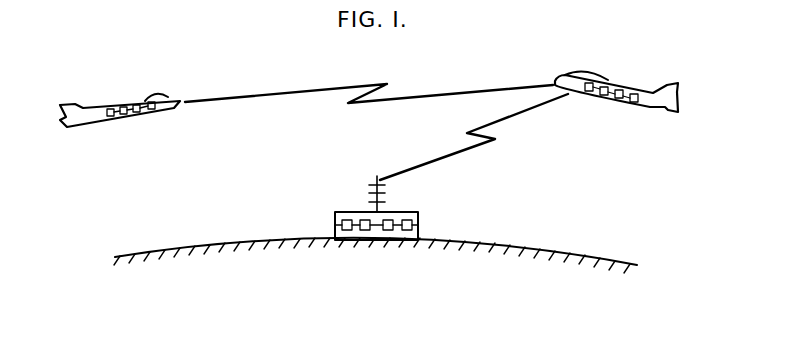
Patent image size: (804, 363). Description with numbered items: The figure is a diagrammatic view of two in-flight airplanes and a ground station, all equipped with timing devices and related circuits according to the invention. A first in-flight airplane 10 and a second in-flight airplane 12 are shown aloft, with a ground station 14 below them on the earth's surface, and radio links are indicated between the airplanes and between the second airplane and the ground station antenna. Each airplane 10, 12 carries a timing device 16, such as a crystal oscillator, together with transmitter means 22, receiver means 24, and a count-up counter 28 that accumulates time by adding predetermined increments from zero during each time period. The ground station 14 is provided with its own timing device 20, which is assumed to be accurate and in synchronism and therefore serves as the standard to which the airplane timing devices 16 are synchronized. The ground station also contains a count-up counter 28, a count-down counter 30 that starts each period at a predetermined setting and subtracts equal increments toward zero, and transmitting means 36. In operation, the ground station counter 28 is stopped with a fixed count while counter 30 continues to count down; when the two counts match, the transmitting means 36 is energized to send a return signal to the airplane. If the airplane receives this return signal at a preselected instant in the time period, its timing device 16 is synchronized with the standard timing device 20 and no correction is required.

The first in-flight airplane 10 is at (112, 102).
The second in-flight airplane 12 is at (615, 78).
The ground station 14 is at (358, 209).
The timing device 16 is at (160, 112).
The timing device 20 is at (335, 221).
The transmitter means 22 is at (140, 114).
The receiver means 24 is at (124, 116).
The count-up counter 28 is at (111, 118).
The count-down counter 30 is at (387, 232).
The transmitting means 36 is at (418, 224).